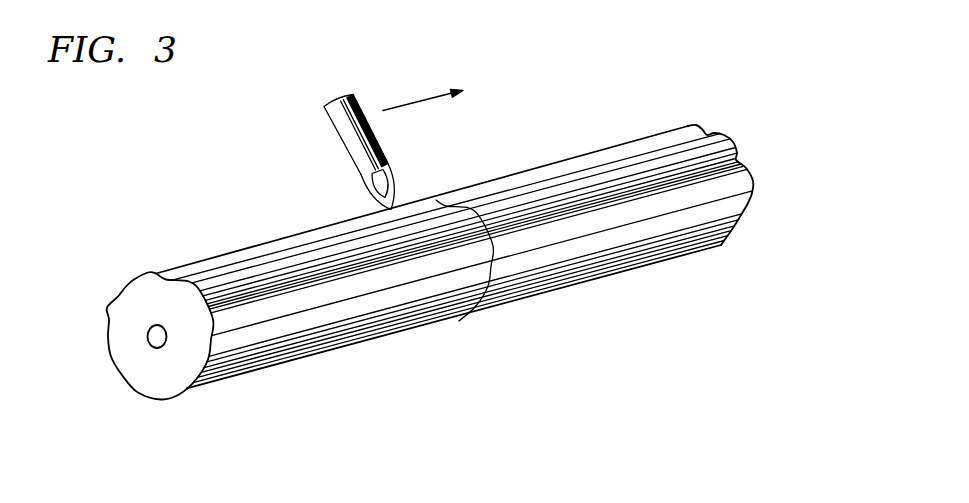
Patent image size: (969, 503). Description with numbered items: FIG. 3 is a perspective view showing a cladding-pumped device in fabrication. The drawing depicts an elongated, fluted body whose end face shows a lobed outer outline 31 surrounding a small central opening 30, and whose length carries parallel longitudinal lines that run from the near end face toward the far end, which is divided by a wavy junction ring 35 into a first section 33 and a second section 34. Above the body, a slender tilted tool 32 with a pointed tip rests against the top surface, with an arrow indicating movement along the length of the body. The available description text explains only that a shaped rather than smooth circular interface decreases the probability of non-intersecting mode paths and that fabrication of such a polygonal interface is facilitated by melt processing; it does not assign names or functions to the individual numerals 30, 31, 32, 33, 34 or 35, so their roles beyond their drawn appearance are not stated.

The central bore 30 is at (140, 338).
The slotted rod end face 31 is at (169, 366).
The marking tool 32 is at (386, 176).
The first rod section 33 is at (726, 150).
The second rod section 34 is at (726, 204).
The junction ring 35 is at (365, 206).